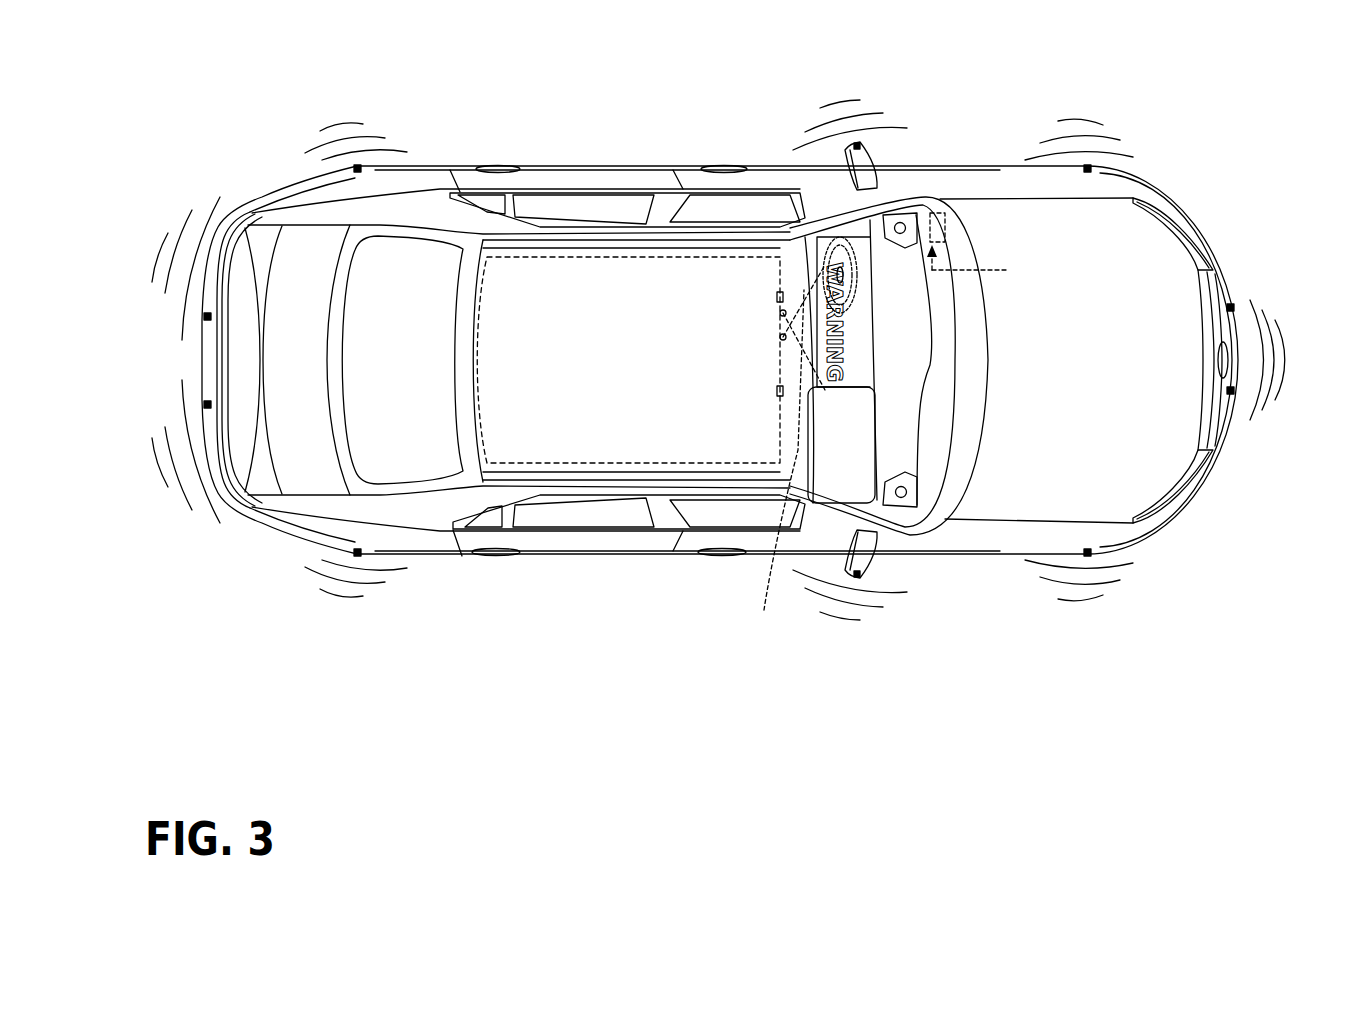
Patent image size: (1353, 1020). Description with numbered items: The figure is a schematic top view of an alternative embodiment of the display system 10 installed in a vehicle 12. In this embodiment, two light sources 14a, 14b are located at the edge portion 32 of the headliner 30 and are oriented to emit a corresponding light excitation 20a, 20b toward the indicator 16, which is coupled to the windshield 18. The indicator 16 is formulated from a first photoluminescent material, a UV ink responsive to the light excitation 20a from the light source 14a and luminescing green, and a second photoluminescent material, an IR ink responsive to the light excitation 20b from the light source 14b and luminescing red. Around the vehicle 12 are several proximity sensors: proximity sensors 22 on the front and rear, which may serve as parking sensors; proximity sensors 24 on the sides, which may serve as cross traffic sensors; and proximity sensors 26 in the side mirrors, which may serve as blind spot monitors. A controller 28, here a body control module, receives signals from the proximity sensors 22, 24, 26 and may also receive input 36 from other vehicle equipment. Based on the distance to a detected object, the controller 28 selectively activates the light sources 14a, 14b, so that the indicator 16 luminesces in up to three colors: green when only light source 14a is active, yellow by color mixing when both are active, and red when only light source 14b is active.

The display system 10 is at (982, 220).
The vehicle 12 is at (488, 130).
The light source 14a is at (780, 314).
The light source 14b is at (780, 338).
The indicator 16 is at (850, 432).
The windshield 18 is at (898, 370).
The light excitation 20a is at (777, 297).
The light excitation 20b is at (777, 391).
The proximity sensors 22 is at (207, 317).
The proximity sensors 24 is at (357, 166).
The proximity sensors 26 is at (857, 144).
The controller 28 is at (940, 212).
The headliner 30 is at (594, 246).
The edge portion 32 is at (778, 466).
The input 36 is at (963, 270).